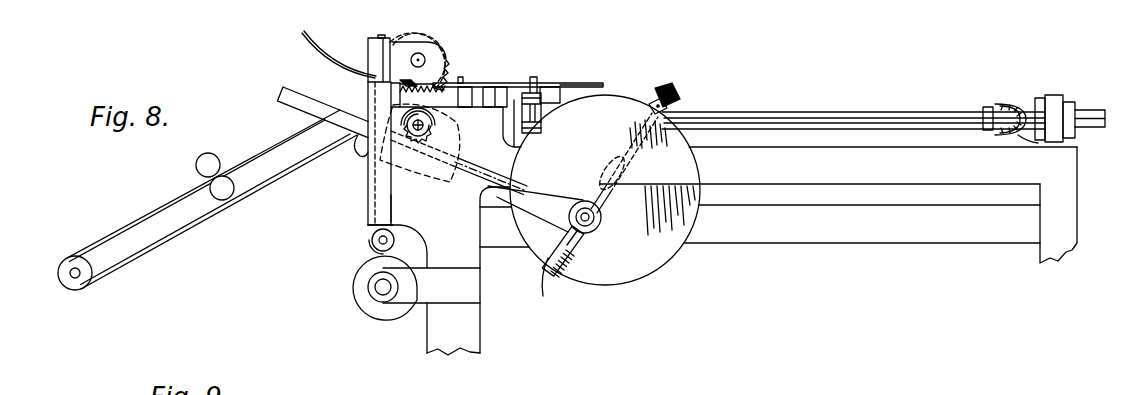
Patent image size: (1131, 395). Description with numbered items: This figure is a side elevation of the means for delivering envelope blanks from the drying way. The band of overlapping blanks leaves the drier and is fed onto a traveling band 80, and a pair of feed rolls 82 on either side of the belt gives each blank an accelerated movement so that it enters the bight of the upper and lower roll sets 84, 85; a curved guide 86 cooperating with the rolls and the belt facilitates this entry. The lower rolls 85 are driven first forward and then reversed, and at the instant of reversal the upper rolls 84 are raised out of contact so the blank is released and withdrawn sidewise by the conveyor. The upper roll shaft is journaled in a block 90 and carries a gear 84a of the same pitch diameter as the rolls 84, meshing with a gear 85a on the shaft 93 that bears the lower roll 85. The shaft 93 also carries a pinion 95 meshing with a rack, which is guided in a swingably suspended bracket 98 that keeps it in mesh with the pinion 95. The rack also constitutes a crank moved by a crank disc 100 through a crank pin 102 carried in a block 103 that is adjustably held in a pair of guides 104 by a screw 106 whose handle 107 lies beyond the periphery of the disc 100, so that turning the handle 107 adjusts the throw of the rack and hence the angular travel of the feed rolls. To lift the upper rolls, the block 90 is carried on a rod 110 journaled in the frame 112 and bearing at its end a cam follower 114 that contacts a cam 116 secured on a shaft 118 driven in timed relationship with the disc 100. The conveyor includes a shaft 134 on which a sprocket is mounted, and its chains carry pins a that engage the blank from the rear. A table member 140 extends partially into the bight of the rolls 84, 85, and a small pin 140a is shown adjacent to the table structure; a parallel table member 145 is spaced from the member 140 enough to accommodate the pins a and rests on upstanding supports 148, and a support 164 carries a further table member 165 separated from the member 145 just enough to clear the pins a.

The traveling band 80 is at (160, 248).
The feed rolls 82 is at (214, 186).
The upper rolls 84 is at (446, 52).
The gear 84a is at (448, 42).
The lower rolls 85 is at (462, 154).
The gear 85a is at (392, 96).
The curved guide 86 is at (305, 42).
The block 90 is at (368, 50).
The shaft 93 is at (423, 124).
The pinion 95 is at (445, 157).
The bracket 98 is at (358, 150).
The crank disc 100 is at (641, 262).
The crank pin 102 is at (587, 223).
The block 103 is at (567, 228).
The guides 104 is at (556, 254).
The screw 106 is at (566, 244).
The handle 107 is at (667, 90).
The rod 110 is at (374, 194).
The frame 112 is at (400, 207).
The cam follower 114 is at (371, 241).
The cam 116 is at (391, 317).
The shaft 118 is at (382, 288).
The shaft 134 is at (864, 118).
The table member 140 is at (532, 112).
The pin 140a is at (459, 80).
The table member 145 is at (485, 82).
The upstanding supports 148 is at (511, 88).
The support 164 is at (553, 88).
The table member 165 is at (583, 84).
The pins a is at (534, 77).